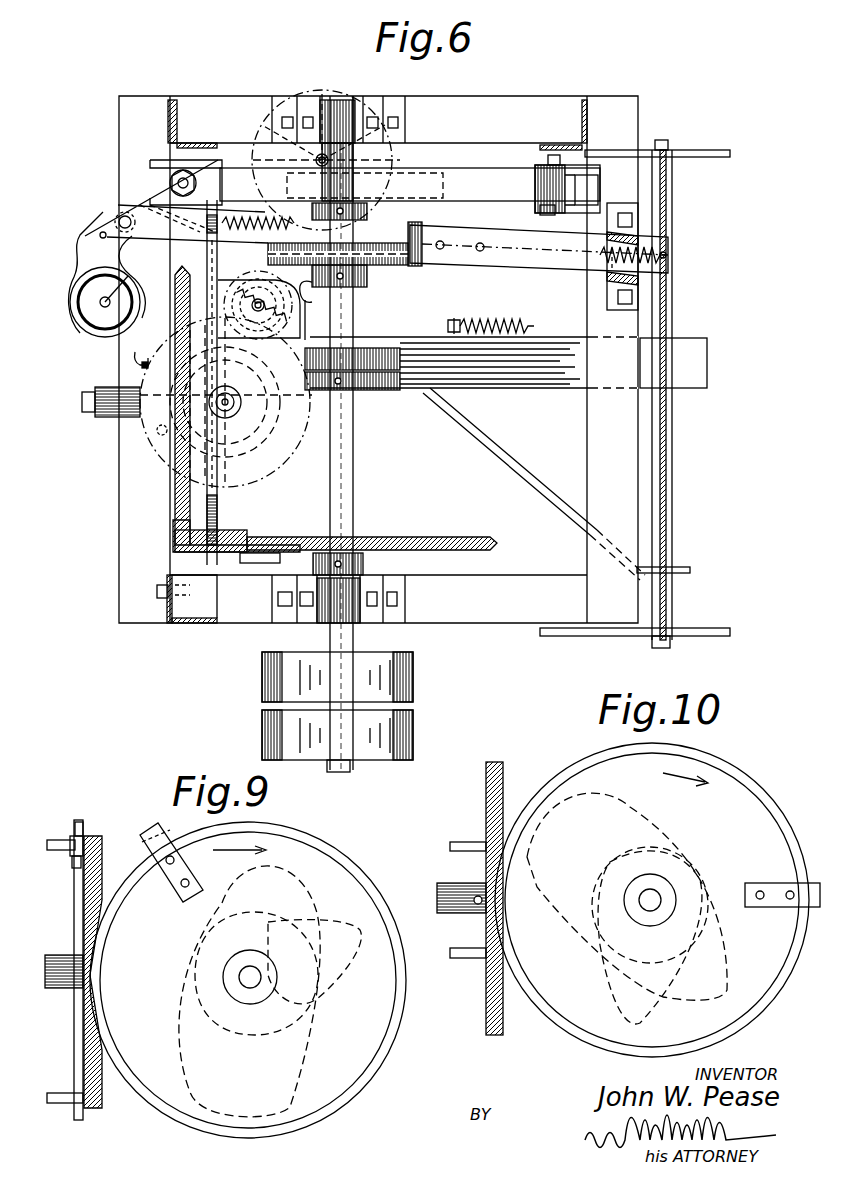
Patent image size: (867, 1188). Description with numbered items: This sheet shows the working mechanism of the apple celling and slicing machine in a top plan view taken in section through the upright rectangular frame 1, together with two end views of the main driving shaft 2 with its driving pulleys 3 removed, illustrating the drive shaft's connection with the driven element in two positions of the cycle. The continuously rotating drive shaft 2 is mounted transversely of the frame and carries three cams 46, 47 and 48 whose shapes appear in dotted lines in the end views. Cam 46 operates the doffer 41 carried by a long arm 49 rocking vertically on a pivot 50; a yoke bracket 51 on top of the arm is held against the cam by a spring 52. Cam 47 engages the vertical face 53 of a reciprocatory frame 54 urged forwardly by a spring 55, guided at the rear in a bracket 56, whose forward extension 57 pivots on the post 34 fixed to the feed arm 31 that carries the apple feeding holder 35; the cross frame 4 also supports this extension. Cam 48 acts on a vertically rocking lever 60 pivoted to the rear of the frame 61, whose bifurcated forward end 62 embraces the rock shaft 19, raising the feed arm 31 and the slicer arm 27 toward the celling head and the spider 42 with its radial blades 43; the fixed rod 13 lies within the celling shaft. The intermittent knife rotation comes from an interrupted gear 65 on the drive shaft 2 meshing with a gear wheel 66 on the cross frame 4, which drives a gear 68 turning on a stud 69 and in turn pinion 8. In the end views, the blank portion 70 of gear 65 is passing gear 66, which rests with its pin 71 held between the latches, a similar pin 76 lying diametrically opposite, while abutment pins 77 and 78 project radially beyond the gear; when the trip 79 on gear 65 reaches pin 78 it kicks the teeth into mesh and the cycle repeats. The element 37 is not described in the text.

In FIG. 6, the frame 1 is at (180, 623).
In FIG. 6, the main driving shaft 2 is at (353, 502).
In FIG. 9, the main driving shaft 2 is at (255, 978).
In FIG. 10, the main driving shaft 2 is at (652, 905).
In FIG. 6, the pulleys 3 is at (413, 676).
In FIG. 6, the cross frame 4 is at (218, 512).
In FIG. 6, the pinion 8 is at (275, 310).
In FIG. 6, the fixed rod 13 is at (250, 336).
In FIG. 6, the rock shaft 19 is at (200, 183).
In FIG. 6, the arm 27 is at (220, 252).
In FIG. 6, the arm 31 is at (140, 200).
In FIG. 6, the post 34 is at (105, 225).
In FIG. 6, the apple feeding holder 35 is at (92, 320).
In FIG. 6, the pin 37 is at (126, 272).
In FIG. 6, the doffer 41 is at (315, 293).
In FIG. 6, the spider 42 is at (330, 94).
In FIG. 6, the radial blades 43 is at (280, 133).
In FIG. 6, the cam 46 is at (378, 352).
In FIG. 9, the cam 46 is at (315, 910).
In FIG. 10, the cam 46 is at (727, 962).
In FIG. 6, the cam 47 is at (385, 265).
In FIG. 9, the cam 47 is at (312, 1025).
In FIG. 10, the cam 47 is at (692, 840).
In FIG. 6, the cam 48 is at (445, 176).
In FIG. 9, the cam 48 is at (345, 958).
In FIG. 10, the cam 48 is at (605, 986).
In FIG. 6, the arm 49 is at (525, 382).
In FIG. 6, the pivot 50 is at (674, 450).
In FIG. 6, the yoke bracket 51 is at (378, 385).
In FIG. 6, the spring 52 is at (530, 326).
In FIG. 6, the vertical face 53 is at (422, 260).
In FIG. 6, the reciprocatory frame 54 is at (516, 262).
In FIG. 6, the spring 55 is at (668, 250).
In FIG. 6, the bracket 56 is at (640, 287).
In FIG. 6, the forward extension 57 is at (120, 216).
In FIG. 6, the rocking lever 60 is at (540, 184).
In FIG. 6, the rear of the frame 61 is at (545, 215).
In FIG. 6, the bifurcated forward end 62 is at (168, 165).
In FIG. 6, the interrupted gear 65 is at (248, 540).
In FIG. 9, the interrupted gear 65 is at (132, 878).
In FIG. 10, the interrupted gear 65 is at (662, 896).
In FIG. 6, the gear wheel 66 is at (175, 505).
In FIG. 9, the gear wheel 66 is at (104, 870).
In FIG. 10, the gear wheel 66 is at (504, 778).
In FIG. 6, the gear 68 is at (290, 452).
In FIG. 6, the stud 69 is at (240, 410).
In FIG. 6, the blank portion 70 is at (478, 530).
In FIG. 9, the blank portion 70 is at (352, 858).
In FIG. 10, the blank portion 70 is at (550, 1028).
In FIG. 6, the pin 71 is at (144, 349).
In FIG. 9, the pin 71 is at (56, 840).
In FIG. 9, the pin 76 is at (56, 1093).
In FIG. 6, the abutment pin 77 is at (160, 440).
In FIG. 9, the abutment pin 77 is at (80, 822).
In FIG. 9, the abutment pin 78 is at (76, 1036).
In FIG. 9, the trip 79 is at (155, 825).